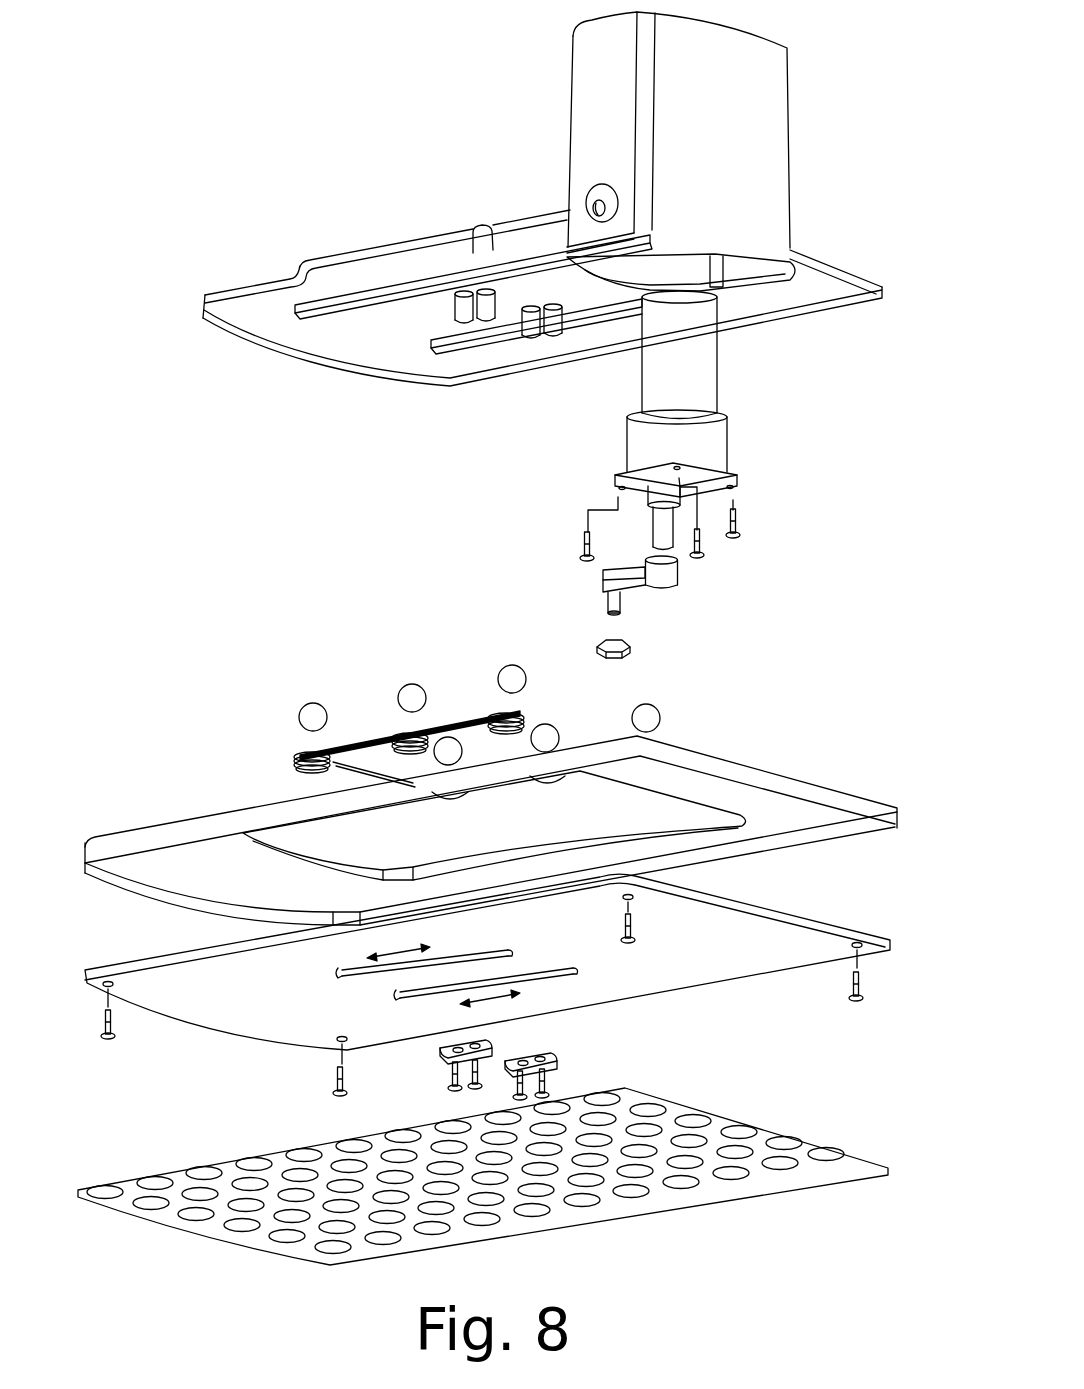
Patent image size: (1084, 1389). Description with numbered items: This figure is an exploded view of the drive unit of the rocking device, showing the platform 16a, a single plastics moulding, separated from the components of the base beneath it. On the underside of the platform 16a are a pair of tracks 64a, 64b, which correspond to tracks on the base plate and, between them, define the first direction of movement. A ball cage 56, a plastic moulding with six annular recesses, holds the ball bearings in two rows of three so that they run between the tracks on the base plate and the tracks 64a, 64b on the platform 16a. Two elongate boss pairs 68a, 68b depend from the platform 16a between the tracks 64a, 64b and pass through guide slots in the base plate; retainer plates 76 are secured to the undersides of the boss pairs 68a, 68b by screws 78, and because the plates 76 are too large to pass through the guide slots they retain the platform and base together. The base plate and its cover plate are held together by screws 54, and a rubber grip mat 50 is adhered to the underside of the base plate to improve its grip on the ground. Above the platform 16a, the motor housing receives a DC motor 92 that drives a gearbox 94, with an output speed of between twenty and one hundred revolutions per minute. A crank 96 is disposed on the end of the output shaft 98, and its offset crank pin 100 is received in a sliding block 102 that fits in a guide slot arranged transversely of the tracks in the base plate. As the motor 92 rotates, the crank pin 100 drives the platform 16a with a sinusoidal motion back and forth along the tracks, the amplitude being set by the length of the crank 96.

The platform 16a is at (208, 300).
The track 64a is at (468, 347).
The track 64b is at (322, 318).
The elongate boss pair 68a is at (548, 312).
The elongate boss pair 68b is at (492, 298).
The DC motor 92 is at (697, 342).
The gearbox 94 is at (708, 438).
The output shaft 98 is at (650, 525).
The crank 96 is at (670, 572).
The crank pin 100 is at (605, 592).
The sliding block 102 is at (630, 649).
The ball cage 56 is at (293, 752).
The screws 54 is at (630, 937).
The retainer plates 76 is at (492, 1046).
The screws 78 is at (450, 1077).
The grip mat 50 is at (167, 1213).